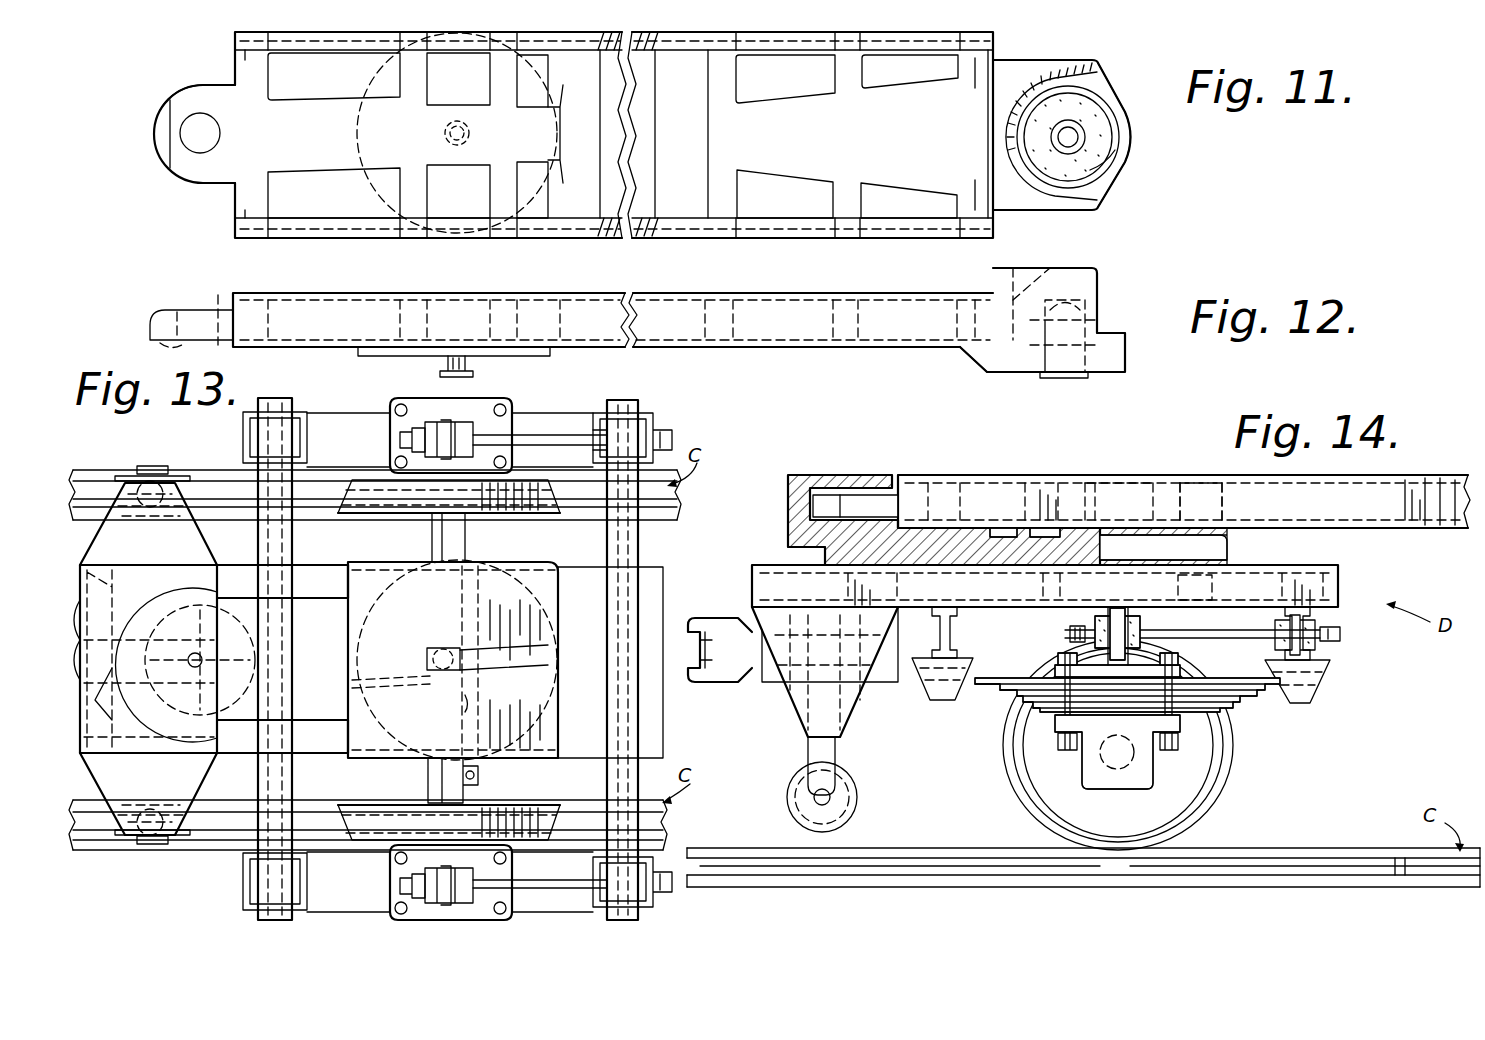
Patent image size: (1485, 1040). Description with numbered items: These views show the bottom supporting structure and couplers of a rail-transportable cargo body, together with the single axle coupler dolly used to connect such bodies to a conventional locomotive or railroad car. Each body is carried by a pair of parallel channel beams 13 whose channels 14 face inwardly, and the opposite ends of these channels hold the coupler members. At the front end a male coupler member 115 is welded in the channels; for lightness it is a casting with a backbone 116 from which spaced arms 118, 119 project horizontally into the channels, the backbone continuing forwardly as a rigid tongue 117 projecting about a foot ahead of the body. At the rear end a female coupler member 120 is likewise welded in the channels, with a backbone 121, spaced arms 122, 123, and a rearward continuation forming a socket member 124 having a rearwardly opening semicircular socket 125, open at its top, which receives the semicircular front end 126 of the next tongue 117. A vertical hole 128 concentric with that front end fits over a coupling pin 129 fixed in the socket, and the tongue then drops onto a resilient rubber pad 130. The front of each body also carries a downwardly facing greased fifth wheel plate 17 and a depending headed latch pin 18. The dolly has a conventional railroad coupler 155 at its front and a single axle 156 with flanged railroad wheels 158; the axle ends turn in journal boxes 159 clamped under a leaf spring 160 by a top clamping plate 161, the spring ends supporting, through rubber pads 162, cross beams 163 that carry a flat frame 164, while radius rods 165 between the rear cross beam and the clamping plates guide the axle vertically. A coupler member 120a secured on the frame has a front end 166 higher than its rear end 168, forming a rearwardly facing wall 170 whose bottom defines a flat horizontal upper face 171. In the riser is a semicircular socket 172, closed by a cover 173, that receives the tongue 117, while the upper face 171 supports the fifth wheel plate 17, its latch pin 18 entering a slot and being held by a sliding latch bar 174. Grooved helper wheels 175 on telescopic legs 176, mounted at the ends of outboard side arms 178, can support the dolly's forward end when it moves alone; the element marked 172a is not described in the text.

In FIG. 11, the channel beams 13 is at (630, 40).
In FIG. 12, the channel beams 13 is at (625, 298).
In FIG. 14, the channel beams 13 is at (1448, 468).
In FIG. 11, the channels 14 is at (645, 42).
In FIG. 11, the fifth wheel plate 17 is at (545, 85).
In FIG. 12, the fifth wheel plate 17 is at (550, 353).
In FIG. 13, the fifth wheel plate 17 is at (542, 608).
In FIG. 14, the fifth wheel plate 17 is at (1066, 495).
In FIG. 11, the latch pin 18 is at (445, 133).
In FIG. 12, the latch pin 18 is at (470, 367).
In FIG. 13, the latch pin 18 is at (422, 657).
In FIG. 14, the latch pin 18 is at (1102, 520).
In FIG. 11, the male coupler member 115 is at (230, 69).
In FIG. 12, the male coupler member 115 is at (228, 298).
In FIG. 14, the male coupler member 115 is at (1222, 508).
In FIG. 11, the backbone 116 is at (330, 106).
In FIG. 12, the backbone 116 is at (355, 300).
In FIG. 11, the tongue 117 is at (180, 97).
In FIG. 12, the tongue 117 is at (165, 318).
In FIG. 14, the tongue 117 is at (835, 494).
In FIG. 11, the arms 118 is at (245, 56).
In FIG. 11, the arms 119 is at (414, 50).
In FIG. 12, the arms 119 is at (452, 305).
In FIG. 14, the arms 119 is at (1098, 460).
In FIG. 11, the female coupler member 120 is at (1024, 62).
In FIG. 12, the female coupler member 120 is at (1099, 276).
In FIG. 13, the coupler member 120a is at (299, 571).
In FIG. 14, the coupler member 120a is at (870, 472).
In FIG. 11, the backbone 121 is at (847, 133).
In FIG. 12, the backbone 121 is at (875, 347).
In FIG. 11, the arms 122 is at (978, 55).
In FIG. 12, the arms 122 is at (932, 312).
In FIG. 11, the arms 123 is at (722, 55).
In FIG. 12, the arms 123 is at (790, 281).
In FIG. 11, the socket member 124 is at (1116, 83).
In FIG. 11, the socket 125 is at (1020, 118).
In FIG. 12, the socket 125 is at (1040, 295).
In FIG. 11, the semicircular front end 126 is at (163, 165).
In FIG. 11, the vertical hole 128 is at (195, 135).
In FIG. 12, the vertical hole 128 is at (185, 336).
In FIG. 11, the coupling pin 129 is at (1090, 140).
In FIG. 12, the coupling pin 129 is at (1095, 300).
In FIG. 11, the rubber pad 130 is at (1103, 172).
In FIG. 12, the rubber pad 130 is at (1112, 330).
In FIG. 13, the railroad coupler 155 is at (108, 762).
In FIG. 14, the railroad coupler 155 is at (715, 687).
In FIG. 13, the axle 156 is at (462, 540).
In FIG. 14, the axle 156 is at (1104, 800).
In FIG. 13, the flanged railroad wheels 158 is at (355, 496).
In FIG. 14, the flanged railroad wheels 158 is at (1196, 818).
In FIG. 13, the journal boxes 159 is at (389, 448).
In FIG. 14, the journal boxes 159 is at (1160, 775).
In FIG. 13, the leaf spring 160 is at (555, 400).
In FIG. 14, the leaf spring 160 is at (1228, 712).
In FIG. 13, the top clamping plate 161 is at (392, 402).
In FIG. 14, the top clamping plate 161 is at (1070, 676).
In FIG. 13, the rubber pads 162 is at (250, 428).
In FIG. 14, the rubber pads 162 is at (916, 688).
In FIG. 13, the cross beams 163 is at (265, 447).
In FIG. 14, the cross beams 163 is at (940, 632).
In FIG. 13, the flat frame 164 is at (690, 545).
In FIG. 14, the flat frame 164 is at (1343, 571).
In FIG. 13, the radius rods 165 is at (576, 430).
In FIG. 14, the radius rods 165 is at (1200, 640).
In FIG. 13, the front end 166 is at (135, 705).
In FIG. 14, the front end 166 is at (790, 475).
In FIG. 13, the rear end 168 is at (580, 752).
In FIG. 14, the rear end 168 is at (1213, 587).
In FIG. 13, the rearwardly facing wall 170 is at (222, 625).
In FIG. 14, the rearwardly facing wall 170 is at (904, 471).
In FIG. 14, the flat horizontal upper face 171 is at (1032, 528).
In FIG. 13, the socket 172 is at (172, 600).
In FIG. 14, the socket 172 is at (790, 486).
In FIG. 13, the support plate 172a is at (522, 655).
In FIG. 14, the support plate 172a is at (1214, 548).
In FIG. 13, the cover 173 is at (340, 679).
In FIG. 14, the cover 173 is at (996, 528).
In FIG. 13, the sliding latch bar 174 is at (465, 703).
In FIG. 14, the sliding latch bar 174 is at (1195, 498).
In FIG. 13, the helper wheels 175 is at (137, 470).
In FIG. 14, the helper wheels 175 is at (850, 822).
In FIG. 13, the telescopic legs 176 is at (150, 466).
In FIG. 14, the telescopic legs 176 is at (835, 760).
In FIG. 13, the outboard side arms 178 is at (170, 533).
In FIG. 14, the outboard side arms 178 is at (847, 702).